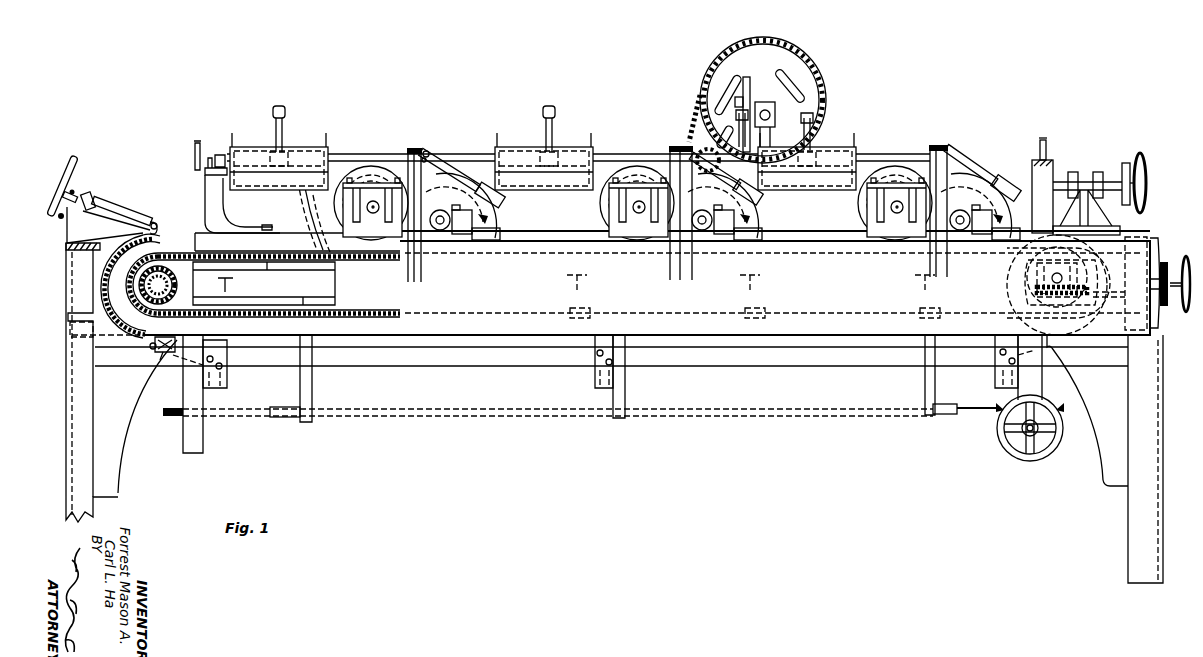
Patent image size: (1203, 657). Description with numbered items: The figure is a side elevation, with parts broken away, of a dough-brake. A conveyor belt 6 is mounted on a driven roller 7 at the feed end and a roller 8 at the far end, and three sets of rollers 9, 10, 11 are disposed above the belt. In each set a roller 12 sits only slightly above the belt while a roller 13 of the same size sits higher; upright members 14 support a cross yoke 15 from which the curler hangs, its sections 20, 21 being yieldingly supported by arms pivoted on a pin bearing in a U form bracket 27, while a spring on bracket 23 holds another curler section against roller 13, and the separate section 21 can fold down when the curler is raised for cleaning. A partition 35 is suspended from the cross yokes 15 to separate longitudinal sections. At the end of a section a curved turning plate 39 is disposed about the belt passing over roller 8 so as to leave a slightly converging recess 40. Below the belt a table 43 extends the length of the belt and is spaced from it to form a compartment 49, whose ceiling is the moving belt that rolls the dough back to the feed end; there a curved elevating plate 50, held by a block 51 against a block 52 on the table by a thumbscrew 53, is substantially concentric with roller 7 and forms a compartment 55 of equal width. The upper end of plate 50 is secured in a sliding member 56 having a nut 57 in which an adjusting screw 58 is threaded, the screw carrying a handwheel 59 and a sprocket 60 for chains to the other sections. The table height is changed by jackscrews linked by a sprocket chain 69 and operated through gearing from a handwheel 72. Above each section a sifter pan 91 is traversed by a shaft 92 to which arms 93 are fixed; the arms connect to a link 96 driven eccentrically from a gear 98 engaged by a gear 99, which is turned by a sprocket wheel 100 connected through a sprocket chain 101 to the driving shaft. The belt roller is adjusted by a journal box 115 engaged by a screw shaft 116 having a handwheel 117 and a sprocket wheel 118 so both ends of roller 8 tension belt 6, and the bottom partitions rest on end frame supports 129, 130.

The conveyor belt 6 is at (183, 255).
The roller 7 is at (178, 289).
The roller 8 is at (1014, 262).
The set of rollers 9 is at (433, 140).
The set of rollers 10 is at (695, 142).
The set of rollers 11 is at (953, 138).
The roller 12 is at (445, 252).
The roller 13 is at (332, 206).
The upright members 14 is at (432, 158).
The cross yoke 15 is at (198, 168).
The curler section 20 is at (462, 162).
The curler section 21 is at (496, 210).
The bracket 23 is at (406, 152).
The U form bracket 27 is at (950, 150).
The partition 35 is at (300, 202).
The curved turning plate 39 is at (1100, 257).
The converging recess 40 is at (1100, 306).
The table 43 is at (272, 342).
The compartment 49 is at (236, 342).
The curved elevating plate 50 is at (104, 300).
The block 51 is at (165, 339).
The block 52 is at (162, 360).
The thumbscrew 53 is at (150, 346).
The compartment 55 is at (107, 268).
The sliding member 56 is at (156, 218).
The nut 57 is at (122, 205).
The adjusting screw 58 is at (94, 196).
The handwheel 59 is at (73, 155).
The sprocket 60 is at (78, 180).
The sprocket chain 69 is at (248, 418).
The handwheel 72 is at (1028, 461).
The sifter pan 91 is at (256, 148).
The shaft 92 is at (612, 152).
The arm 93 is at (289, 152).
The link 96 is at (289, 106).
The gear 98 is at (751, 94).
The gear 99 is at (770, 112).
The sprocket wheel 100 is at (818, 98).
The sprocket chain 101 is at (701, 97).
The journal box 115 is at (1022, 296).
The screw shaft 116 is at (1130, 290).
The handwheel 117 is at (1166, 258).
The sprocket wheel 118 is at (1164, 310).
The end frame support 129 is at (90, 384).
The end frame support 130 is at (1148, 381).